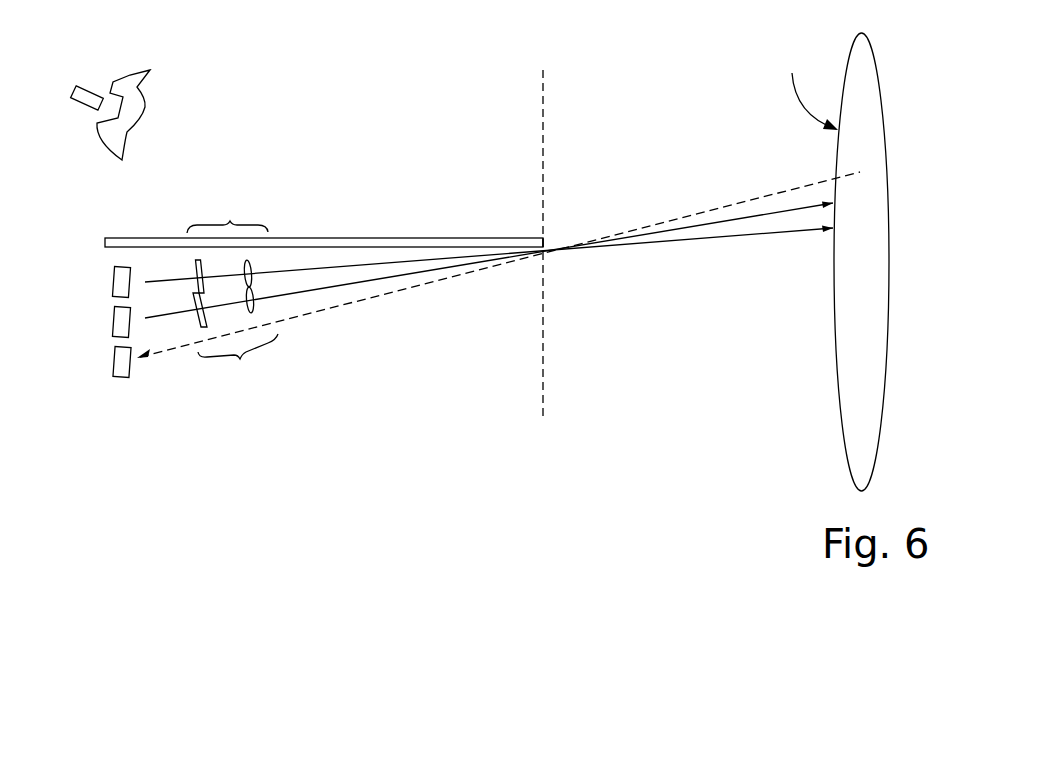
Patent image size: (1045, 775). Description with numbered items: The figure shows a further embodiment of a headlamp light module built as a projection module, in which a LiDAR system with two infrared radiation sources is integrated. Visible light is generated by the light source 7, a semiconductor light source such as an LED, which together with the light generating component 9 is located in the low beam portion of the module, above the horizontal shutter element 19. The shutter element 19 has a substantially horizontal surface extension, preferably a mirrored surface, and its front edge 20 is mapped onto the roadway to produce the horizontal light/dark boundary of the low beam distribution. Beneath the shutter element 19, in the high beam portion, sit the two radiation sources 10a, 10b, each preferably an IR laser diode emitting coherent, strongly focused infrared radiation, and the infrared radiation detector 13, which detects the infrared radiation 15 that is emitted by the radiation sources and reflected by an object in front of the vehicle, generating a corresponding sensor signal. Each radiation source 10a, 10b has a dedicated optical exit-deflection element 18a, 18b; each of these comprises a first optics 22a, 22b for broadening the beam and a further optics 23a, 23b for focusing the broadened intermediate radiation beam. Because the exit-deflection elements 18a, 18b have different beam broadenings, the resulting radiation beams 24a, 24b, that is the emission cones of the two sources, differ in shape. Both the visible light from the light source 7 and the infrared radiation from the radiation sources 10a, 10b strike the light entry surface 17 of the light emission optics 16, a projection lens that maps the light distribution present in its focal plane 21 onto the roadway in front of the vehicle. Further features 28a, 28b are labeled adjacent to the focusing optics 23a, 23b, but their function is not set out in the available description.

The light source 7 is at (90, 90).
The light generating component 9 is at (128, 75).
The first radiation source 10a is at (117, 281).
The second radiation source 10b is at (117, 321).
The infrared radiation detector 13 is at (117, 364).
The infrared radiation 15 is at (743, 202).
The light emission optics 16 is at (865, 99).
The light entry surface 17 is at (807, 87).
The first optical exit-deflection element 18a is at (227, 212).
The second optical exit-deflection element 18b is at (238, 362).
The shutter element 19 is at (413, 240).
The front edge 20 is at (545, 241).
The focal plane 21 is at (543, 120).
The first optics 22a is at (193, 266).
The first optics 22b is at (197, 317).
The further optics 23a is at (253, 265).
The further optics 23b is at (255, 303).
The radiation beam 24a is at (760, 235).
The radiation beam 24b is at (697, 228).
The first lens surface 28a is at (232, 268).
The second lens surface 28b is at (233, 298).